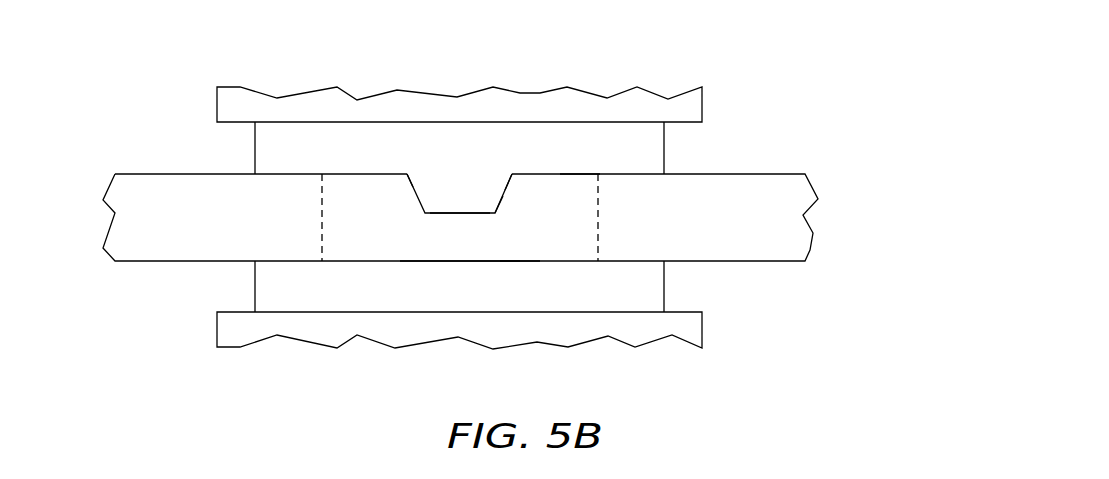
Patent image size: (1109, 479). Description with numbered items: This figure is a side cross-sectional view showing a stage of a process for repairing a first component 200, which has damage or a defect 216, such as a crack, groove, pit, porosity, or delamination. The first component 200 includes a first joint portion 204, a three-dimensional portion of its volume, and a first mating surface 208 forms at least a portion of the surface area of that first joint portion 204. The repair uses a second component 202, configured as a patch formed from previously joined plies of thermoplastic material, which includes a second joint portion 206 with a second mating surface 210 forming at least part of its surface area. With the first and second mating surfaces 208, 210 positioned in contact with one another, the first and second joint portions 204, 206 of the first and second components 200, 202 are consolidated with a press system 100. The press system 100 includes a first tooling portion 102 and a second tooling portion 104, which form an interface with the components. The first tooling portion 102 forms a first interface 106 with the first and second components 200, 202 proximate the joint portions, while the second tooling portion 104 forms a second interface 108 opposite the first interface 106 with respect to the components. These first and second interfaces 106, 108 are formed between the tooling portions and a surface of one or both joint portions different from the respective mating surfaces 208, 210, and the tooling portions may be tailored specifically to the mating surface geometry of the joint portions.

The press system 100 is at (716, 114).
The first tooling portion 102 is at (482, 162).
The second tooling portion 104 is at (482, 301).
The first interface 106 is at (578, 174).
The second interface 108 is at (520, 261).
The first component 200 is at (828, 173).
The second component 202 is at (422, 183).
The first joint portion 204 is at (482, 252).
The second joint portion 206 is at (482, 207).
The first mating surface 208 is at (503, 204).
The second mating surface 210 is at (506, 186).
The damage/defect 216 is at (400, 190).